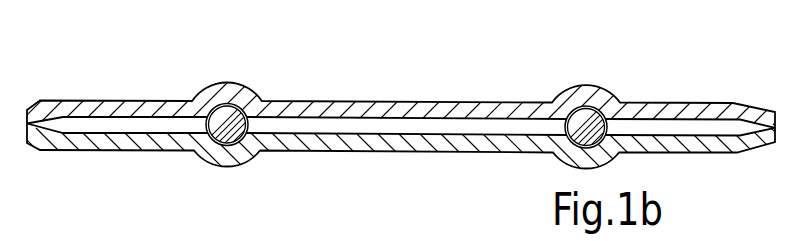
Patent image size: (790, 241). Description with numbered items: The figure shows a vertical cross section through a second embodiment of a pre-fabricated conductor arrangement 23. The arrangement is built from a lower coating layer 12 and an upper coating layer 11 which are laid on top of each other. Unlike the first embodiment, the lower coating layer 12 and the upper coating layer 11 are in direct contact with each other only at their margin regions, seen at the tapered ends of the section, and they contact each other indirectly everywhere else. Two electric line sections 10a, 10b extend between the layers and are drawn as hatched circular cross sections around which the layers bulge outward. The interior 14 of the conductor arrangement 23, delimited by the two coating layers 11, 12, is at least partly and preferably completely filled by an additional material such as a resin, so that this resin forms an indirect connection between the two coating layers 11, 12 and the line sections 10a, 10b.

The electric line section 10a is at (581, 123).
The electric line section 10b is at (232, 117).
The upper coating layer 11 is at (108, 104).
The lower coating layer 12 is at (375, 148).
The interior 14 is at (303, 127).
The pre-fabricated conductor arrangement 23 is at (401, 94).